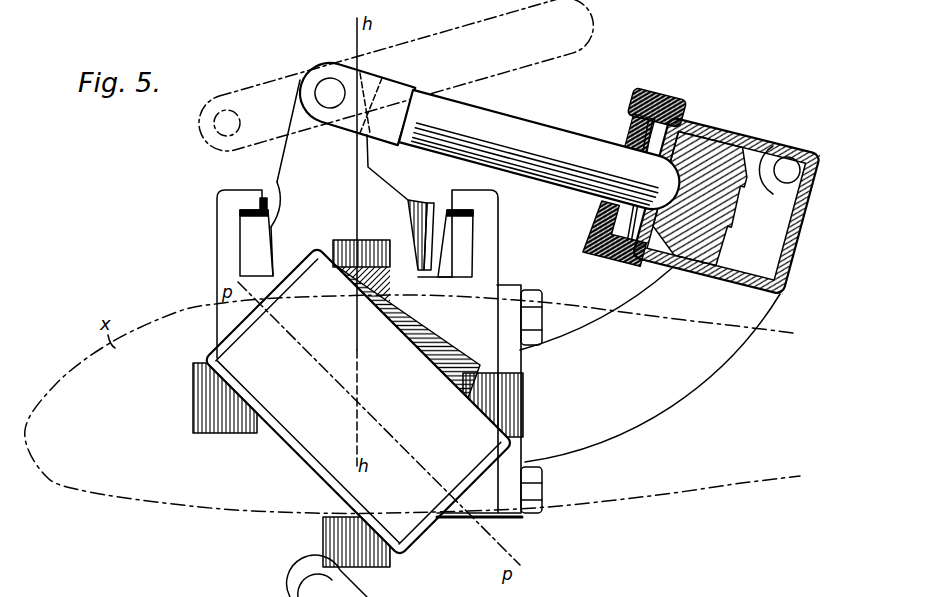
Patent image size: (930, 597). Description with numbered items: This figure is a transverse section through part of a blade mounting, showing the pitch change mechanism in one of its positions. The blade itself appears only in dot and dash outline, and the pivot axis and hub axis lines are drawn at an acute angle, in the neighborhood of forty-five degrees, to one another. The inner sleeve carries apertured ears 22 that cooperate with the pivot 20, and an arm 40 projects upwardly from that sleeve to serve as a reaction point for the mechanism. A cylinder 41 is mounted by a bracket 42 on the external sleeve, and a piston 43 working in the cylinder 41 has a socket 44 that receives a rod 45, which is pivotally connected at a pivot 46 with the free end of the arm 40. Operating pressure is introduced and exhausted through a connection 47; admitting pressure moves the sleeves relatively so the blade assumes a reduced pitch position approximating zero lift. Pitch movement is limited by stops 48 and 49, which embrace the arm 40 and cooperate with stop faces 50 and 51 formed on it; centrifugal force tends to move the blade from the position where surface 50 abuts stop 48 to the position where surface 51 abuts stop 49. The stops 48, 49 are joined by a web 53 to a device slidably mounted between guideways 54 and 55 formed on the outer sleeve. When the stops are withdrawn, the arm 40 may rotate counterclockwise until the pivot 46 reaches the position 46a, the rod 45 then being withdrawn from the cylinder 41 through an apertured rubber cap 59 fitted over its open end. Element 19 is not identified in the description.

The base plate 19 is at (296, 492).
The pivot 20 is at (401, 341).
The apertured ears 22 is at (194, 418).
The arm 40 is at (339, 178).
The cylinder 41 is at (693, 190).
The bracket 42 is at (630, 408).
The piston 43 is at (679, 178).
The socket 44 is at (640, 180).
The rod 45 is at (528, 108).
The pivot 46 is at (333, 86).
The pivot position 46a is at (214, 125).
The connection 47 is at (788, 158).
The stop 48 is at (240, 256).
The stop 49 is at (455, 243).
The stop face 50 is at (276, 193).
The stop face 51 is at (431, 210).
The web 53 is at (416, 200).
The guideway 54 is at (218, 228).
The guideway 55 is at (498, 222).
The rubber cap 59 is at (618, 233).